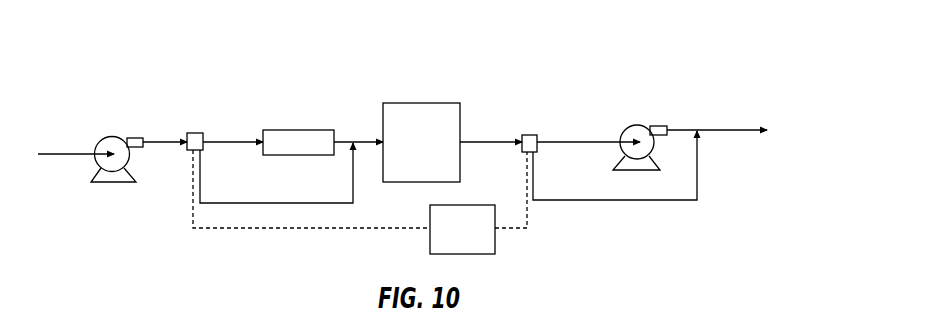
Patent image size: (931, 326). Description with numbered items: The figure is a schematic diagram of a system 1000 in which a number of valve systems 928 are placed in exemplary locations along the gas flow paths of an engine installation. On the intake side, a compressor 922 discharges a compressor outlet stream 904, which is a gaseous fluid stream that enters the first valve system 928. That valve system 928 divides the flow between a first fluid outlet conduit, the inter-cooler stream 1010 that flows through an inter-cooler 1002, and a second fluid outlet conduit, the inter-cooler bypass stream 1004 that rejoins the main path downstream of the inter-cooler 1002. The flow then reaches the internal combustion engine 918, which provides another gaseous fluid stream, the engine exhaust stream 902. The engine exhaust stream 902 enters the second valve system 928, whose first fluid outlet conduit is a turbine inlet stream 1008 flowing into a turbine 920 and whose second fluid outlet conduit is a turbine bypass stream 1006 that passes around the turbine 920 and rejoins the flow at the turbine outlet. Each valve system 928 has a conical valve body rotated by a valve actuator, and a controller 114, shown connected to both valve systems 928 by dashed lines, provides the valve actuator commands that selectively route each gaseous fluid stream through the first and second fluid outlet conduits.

The system 1000 is at (117, 57).
The compressor 922 is at (115, 136).
The compressor outlet stream 904 is at (154, 144).
The valve system 928 is at (193, 133).
The inter-cooler stream 1010 is at (230, 142).
The inter-cooler 1002 is at (302, 130).
The internal combustion engine 918 is at (441, 153).
The engine exhaust stream 902 is at (497, 143).
The turbine inlet stream 1008 is at (583, 142).
The turbine 920 is at (638, 124).
The inter-cooler bypass stream 1004 is at (287, 203).
The turbine bypass stream 1006 is at (655, 200).
The controller 114 is at (481, 241).